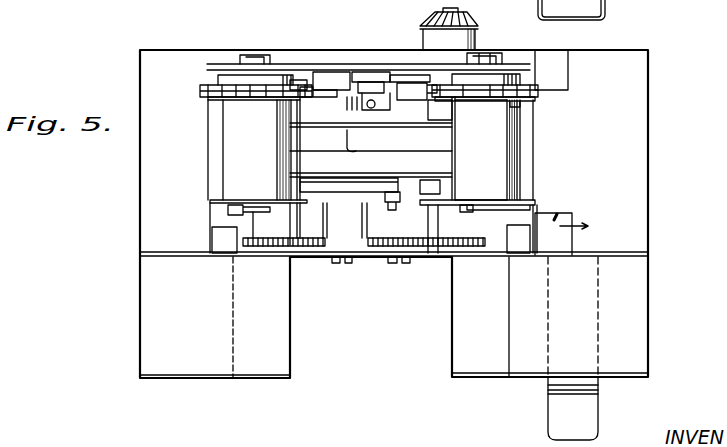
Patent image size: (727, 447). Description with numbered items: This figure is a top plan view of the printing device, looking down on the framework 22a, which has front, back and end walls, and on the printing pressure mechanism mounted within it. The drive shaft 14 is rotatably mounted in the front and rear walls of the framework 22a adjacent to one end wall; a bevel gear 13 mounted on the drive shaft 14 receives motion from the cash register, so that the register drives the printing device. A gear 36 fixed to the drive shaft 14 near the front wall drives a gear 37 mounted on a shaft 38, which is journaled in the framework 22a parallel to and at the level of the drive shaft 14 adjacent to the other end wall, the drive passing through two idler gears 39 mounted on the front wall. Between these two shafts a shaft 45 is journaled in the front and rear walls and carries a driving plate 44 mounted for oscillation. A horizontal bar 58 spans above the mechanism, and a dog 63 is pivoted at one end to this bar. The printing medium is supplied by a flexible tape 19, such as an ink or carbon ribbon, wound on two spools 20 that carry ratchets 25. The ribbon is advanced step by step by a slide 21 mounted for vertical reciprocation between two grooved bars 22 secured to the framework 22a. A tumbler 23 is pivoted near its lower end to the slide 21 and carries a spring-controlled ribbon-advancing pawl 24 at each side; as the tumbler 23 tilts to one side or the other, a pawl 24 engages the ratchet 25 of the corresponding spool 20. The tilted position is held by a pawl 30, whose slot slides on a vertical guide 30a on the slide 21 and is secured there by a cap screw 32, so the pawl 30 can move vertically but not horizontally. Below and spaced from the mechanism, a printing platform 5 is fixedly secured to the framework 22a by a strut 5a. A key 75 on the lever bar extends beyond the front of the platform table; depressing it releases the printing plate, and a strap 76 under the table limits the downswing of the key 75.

The printing platform 5 is at (628, 262).
The strut 5a is at (578, 234).
The bevel gear 13 is at (478, 23).
The drive shaft 14 is at (456, 9).
The flexible tape 19 is at (232, 172).
The spools 20 is at (230, 100).
The slide 21 is at (367, 78).
The grooved bars 22 is at (334, 65).
The framework 22a is at (518, 67).
The tumbler 23 is at (352, 88).
The ribbon-advancing pawl 24 is at (312, 85).
The ratchets 25 is at (218, 86).
The pawl 30 is at (381, 84).
The vertical guide 30a is at (372, 80).
The cap screw 32 is at (381, 93).
The gear 36 is at (456, 247).
The gear 37 is at (246, 248).
The shaft 38 is at (292, 186).
The idler gears 39 is at (326, 247).
The driving plate 44 is at (360, 128).
The shaft 45 is at (445, 150).
The horizontal bar 58 is at (481, 150).
The dog 63 is at (374, 192).
The key 75 is at (592, 403).
The strap 76 is at (605, 12).